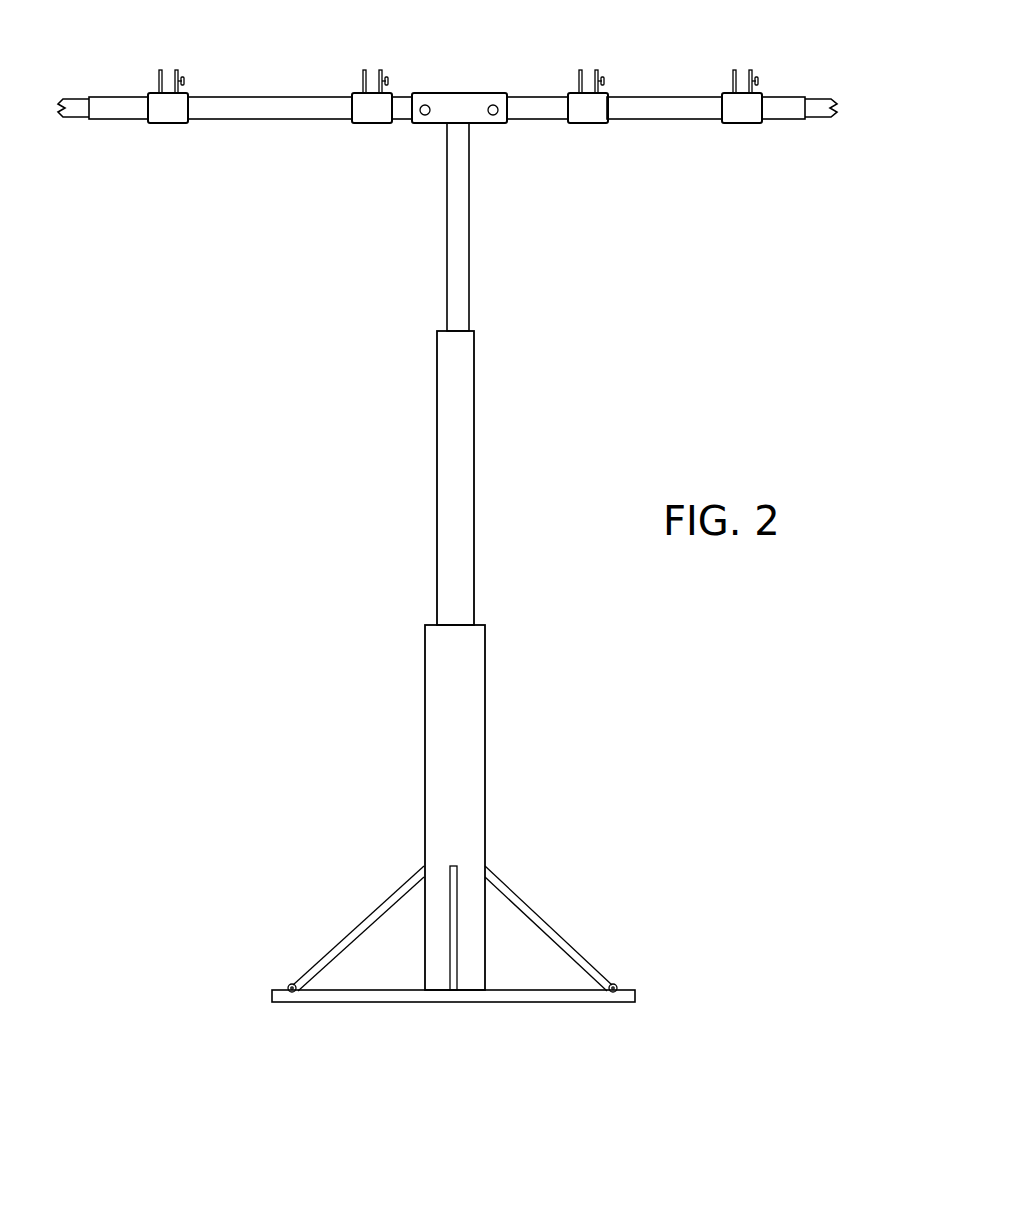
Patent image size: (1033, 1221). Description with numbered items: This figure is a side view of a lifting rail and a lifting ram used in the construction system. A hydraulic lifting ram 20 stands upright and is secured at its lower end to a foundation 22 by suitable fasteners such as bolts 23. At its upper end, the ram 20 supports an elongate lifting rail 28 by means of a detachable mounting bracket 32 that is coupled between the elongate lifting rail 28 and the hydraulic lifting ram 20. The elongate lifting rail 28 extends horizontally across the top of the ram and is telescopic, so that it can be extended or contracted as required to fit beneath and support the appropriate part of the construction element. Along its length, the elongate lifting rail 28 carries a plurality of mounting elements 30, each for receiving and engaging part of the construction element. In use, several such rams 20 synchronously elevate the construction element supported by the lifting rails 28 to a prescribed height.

The hydraulic lifting ram 20 is at (425, 810).
The foundation 22 is at (468, 1066).
The bolts 23 is at (616, 986).
The elongate lifting rail 28 is at (245, 97).
The mounting element 30 is at (347, 123).
The detachable mounting bracket 32 is at (472, 123).